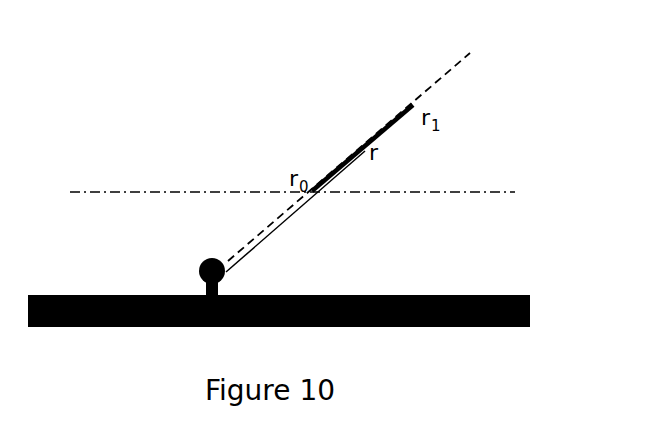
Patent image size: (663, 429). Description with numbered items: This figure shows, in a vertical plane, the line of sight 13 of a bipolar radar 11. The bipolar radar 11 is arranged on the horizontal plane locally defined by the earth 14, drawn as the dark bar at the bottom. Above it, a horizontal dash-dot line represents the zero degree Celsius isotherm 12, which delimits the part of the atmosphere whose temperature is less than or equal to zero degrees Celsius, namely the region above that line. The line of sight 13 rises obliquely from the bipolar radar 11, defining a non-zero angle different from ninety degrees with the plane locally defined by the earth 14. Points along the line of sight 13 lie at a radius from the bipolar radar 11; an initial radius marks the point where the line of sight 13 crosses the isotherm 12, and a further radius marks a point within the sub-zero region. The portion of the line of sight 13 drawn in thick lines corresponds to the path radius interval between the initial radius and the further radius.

The bipolar radar 11 is at (197, 278).
The 0° C. isotherm 12 is at (373, 192).
The line of sight 13 is at (455, 66).
The earth 14 is at (530, 298).